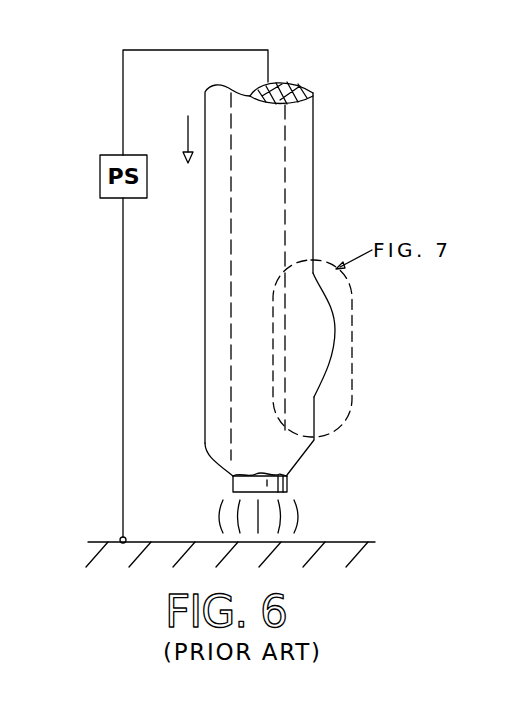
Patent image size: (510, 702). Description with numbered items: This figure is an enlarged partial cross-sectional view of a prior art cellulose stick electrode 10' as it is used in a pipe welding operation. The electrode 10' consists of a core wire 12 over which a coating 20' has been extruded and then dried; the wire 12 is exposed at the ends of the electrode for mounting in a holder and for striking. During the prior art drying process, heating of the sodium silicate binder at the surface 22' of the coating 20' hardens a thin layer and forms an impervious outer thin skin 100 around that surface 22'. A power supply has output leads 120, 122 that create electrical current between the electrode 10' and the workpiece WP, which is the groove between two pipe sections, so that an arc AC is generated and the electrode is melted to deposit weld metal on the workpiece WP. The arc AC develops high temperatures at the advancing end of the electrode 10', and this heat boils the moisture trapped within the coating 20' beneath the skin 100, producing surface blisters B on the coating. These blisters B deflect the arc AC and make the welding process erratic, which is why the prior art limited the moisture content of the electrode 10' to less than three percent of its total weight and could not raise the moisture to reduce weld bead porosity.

The output lead 120 is at (152, 50).
The output lead 122 is at (122, 285).
The prior art electrode 10' is at (273, 264).
The coating 20' is at (196, 264).
The outer thin skin 100 is at (314, 222).
The surface blisters B is at (335, 330).
The wire 12 is at (275, 264).
The surface 22' is at (323, 93).
The arc AC is at (297, 517).
The workpiece WP is at (172, 541).